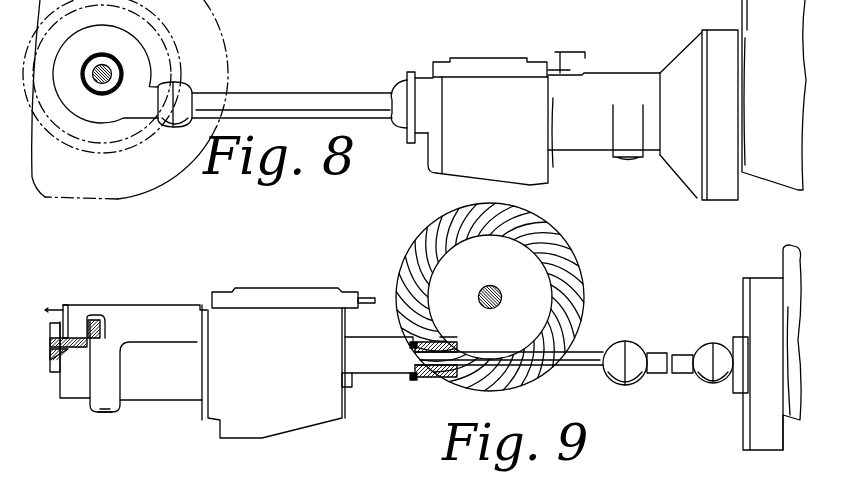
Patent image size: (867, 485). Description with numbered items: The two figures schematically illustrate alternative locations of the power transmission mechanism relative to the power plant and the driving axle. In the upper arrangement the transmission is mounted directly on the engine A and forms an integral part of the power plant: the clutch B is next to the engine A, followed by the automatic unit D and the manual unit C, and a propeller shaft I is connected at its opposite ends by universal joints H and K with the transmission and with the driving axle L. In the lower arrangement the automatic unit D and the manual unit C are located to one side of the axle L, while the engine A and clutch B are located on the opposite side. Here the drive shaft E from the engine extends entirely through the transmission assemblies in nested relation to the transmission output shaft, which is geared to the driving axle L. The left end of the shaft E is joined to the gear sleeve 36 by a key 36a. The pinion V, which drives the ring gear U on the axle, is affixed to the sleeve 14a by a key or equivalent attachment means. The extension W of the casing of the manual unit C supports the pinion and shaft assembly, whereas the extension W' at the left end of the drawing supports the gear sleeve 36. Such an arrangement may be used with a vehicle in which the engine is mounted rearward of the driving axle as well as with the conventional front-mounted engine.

In FIG. 8, the driving axle L is at (110, 66).
In FIG. 9, the driving axle L is at (503, 296).
In FIG. 8, the universal joint K is at (182, 83).
In FIG. 8, the propeller shaft I is at (283, 100).
In FIG. 8, the universal joint H is at (395, 93).
In FIG. 8, the manual unit C is at (452, 158).
In FIG. 9, the manual unit C is at (255, 422).
In FIG. 8, the automatic unit D is at (595, 145).
In FIG. 9, the automatic unit D is at (148, 392).
In FIG. 8, the clutch B is at (718, 195).
In FIG. 9, the clutch B is at (762, 442).
In FIG. 8, the engine A is at (775, 178).
In FIG. 9, the engine A is at (793, 418).
In FIG. 9, the gear sleeve 36 is at (50, 345).
In FIG. 9, the key 36a is at (73, 337).
In FIG. 9, the extension W' is at (56, 380).
In FIG. 9, the extension W is at (390, 378).
In FIG. 9, the sleeve 14a is at (420, 378).
In FIG. 9, the pinion V is at (449, 341).
In FIG. 9, the drive shaft E is at (582, 368).
In FIG. 9, the ring gear U is at (583, 295).